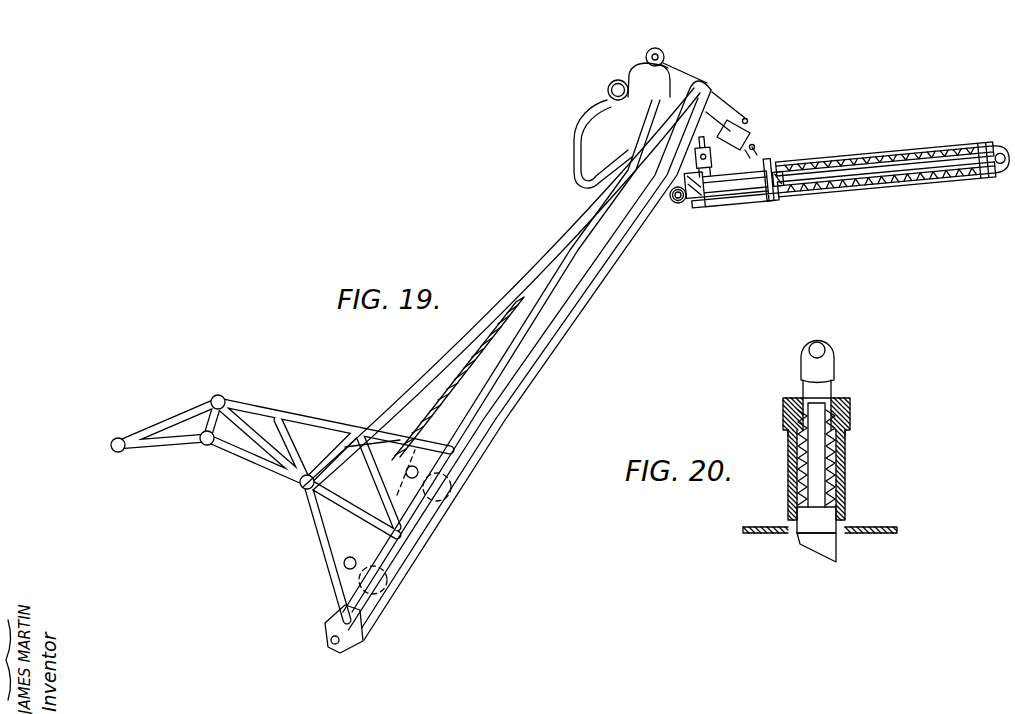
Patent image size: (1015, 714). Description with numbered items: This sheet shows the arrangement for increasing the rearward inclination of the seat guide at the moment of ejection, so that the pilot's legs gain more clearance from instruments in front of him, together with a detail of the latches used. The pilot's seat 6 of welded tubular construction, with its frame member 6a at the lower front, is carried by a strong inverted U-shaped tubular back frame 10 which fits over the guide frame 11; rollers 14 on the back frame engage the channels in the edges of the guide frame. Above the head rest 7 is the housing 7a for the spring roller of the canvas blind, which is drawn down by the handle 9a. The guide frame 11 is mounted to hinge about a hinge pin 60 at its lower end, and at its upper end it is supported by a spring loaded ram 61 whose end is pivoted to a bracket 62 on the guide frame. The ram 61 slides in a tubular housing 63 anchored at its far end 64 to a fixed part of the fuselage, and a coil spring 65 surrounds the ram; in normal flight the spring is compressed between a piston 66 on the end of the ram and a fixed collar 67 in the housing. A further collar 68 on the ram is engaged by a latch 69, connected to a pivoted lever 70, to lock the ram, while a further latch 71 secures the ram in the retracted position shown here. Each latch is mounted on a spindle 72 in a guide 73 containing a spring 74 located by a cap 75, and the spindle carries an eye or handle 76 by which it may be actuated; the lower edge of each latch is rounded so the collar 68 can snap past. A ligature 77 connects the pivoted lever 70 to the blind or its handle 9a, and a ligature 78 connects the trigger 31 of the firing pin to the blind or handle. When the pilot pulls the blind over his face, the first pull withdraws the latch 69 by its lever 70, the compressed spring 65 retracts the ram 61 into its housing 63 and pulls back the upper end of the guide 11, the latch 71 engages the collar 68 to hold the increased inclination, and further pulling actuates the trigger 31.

In FIG. 19, the pilot's seat 6 is at (250, 461).
In FIG. 19, the gantry pivot ball 6a is at (116, 452).
In FIG. 19, the head rest 7 is at (608, 95).
In FIG. 19, the housing 7a is at (635, 68).
In FIG. 19, the handle 9a is at (662, 50).
In FIG. 19, the tubular back frame 10 is at (500, 393).
In FIG. 19, the guide frame 11 is at (582, 317).
In FIG. 19, the rollers 14 is at (452, 497).
In FIG. 19, the trigger 31 is at (757, 130).
In FIG. 19, the hinge pin 60 is at (325, 638).
In FIG. 19, the spring loaded ram 61 is at (778, 203).
In FIG. 19, the bracket 62 is at (672, 205).
In FIG. 19, the tubular housing 63 is at (893, 152).
In FIG. 19, the far end of housing 64 is at (992, 148).
In FIG. 19, the coil spring 65 is at (905, 186).
In FIG. 19, the piston 66 is at (995, 170).
In FIG. 19, the fixed collar 67 is at (793, 198).
In FIG. 19, the collar 68 is at (783, 172).
In FIG. 19, the latch 69 is at (703, 185).
In FIG. 20, the latch 69 is at (815, 546).
In FIG. 19, the pivoted lever 70 is at (682, 160).
In FIG. 19, the further latch 71 is at (769, 160).
In FIG. 20, the spindle 72 is at (822, 466).
In FIG. 20, the guide 73 is at (850, 498).
In FIG. 20, the spring 74 is at (800, 490).
In FIG. 20, the cap 75 is at (848, 400).
In FIG. 20, the eye or handle 76 is at (800, 351).
In FIG. 19, the ligature 77 is at (710, 113).
In FIG. 19, the ligature 78 is at (717, 111).